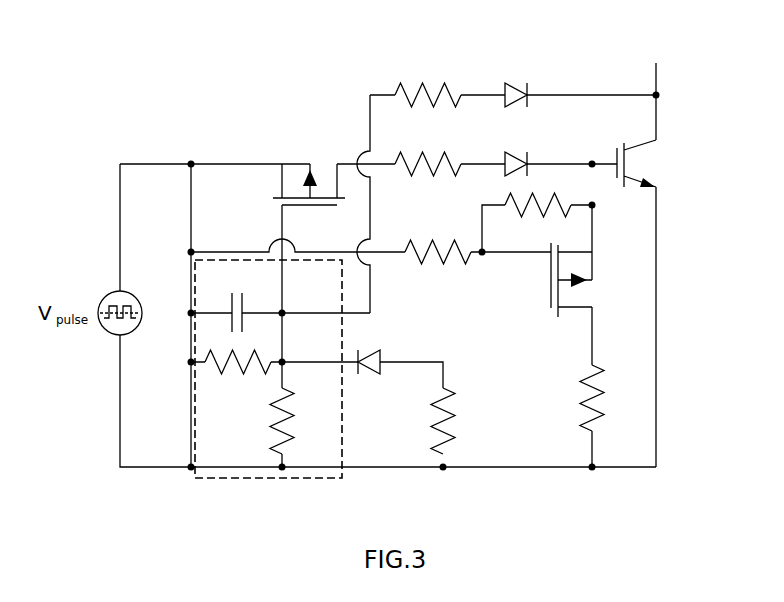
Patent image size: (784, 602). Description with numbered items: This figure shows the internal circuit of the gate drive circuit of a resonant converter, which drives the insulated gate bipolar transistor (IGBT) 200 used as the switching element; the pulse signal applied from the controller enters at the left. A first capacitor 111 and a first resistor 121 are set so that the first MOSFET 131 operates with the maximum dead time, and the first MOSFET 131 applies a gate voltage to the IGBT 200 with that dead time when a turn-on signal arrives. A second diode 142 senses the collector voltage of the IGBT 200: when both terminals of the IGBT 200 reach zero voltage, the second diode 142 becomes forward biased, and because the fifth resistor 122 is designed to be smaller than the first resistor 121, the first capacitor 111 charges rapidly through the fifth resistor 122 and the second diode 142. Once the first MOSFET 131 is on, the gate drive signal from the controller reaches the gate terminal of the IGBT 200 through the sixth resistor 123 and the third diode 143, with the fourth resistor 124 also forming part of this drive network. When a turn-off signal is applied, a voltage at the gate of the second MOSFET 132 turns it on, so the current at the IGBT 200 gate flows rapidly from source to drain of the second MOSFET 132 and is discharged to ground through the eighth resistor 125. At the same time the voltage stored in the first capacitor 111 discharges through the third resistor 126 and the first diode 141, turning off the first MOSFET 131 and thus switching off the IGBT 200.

The first capacitor 111 is at (215, 291).
The first resistor 121 is at (312, 453).
The fifth resistor 122 is at (428, 74).
The sixth resistor 123 is at (400, 136).
The fourth resistor 124 is at (418, 227).
The eighth resistor 125 is at (584, 221).
The third resistor 126 is at (470, 437).
The first MOSFET 131 is at (314, 220).
The second MOSFET 132 is at (535, 321).
The first diode 141 is at (393, 332).
The second diode 142 is at (521, 68).
The third diode 143 is at (526, 136).
The insulated gate bipolar transistor (IGBT) 200 is at (638, 134).